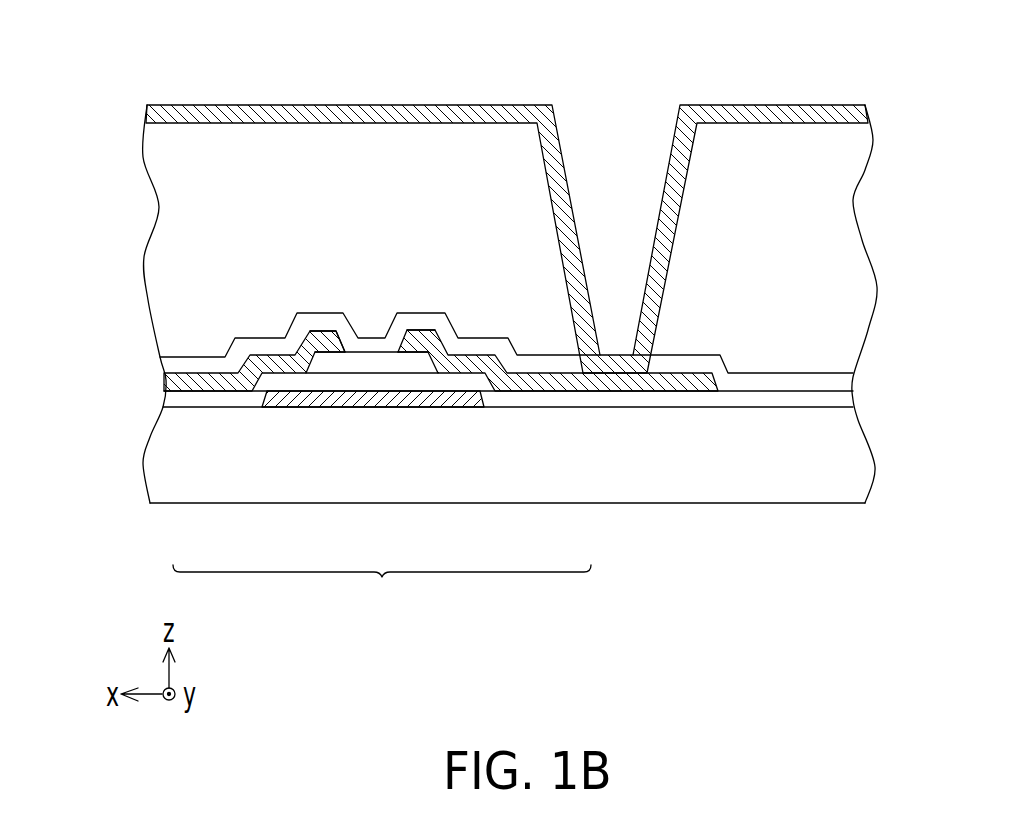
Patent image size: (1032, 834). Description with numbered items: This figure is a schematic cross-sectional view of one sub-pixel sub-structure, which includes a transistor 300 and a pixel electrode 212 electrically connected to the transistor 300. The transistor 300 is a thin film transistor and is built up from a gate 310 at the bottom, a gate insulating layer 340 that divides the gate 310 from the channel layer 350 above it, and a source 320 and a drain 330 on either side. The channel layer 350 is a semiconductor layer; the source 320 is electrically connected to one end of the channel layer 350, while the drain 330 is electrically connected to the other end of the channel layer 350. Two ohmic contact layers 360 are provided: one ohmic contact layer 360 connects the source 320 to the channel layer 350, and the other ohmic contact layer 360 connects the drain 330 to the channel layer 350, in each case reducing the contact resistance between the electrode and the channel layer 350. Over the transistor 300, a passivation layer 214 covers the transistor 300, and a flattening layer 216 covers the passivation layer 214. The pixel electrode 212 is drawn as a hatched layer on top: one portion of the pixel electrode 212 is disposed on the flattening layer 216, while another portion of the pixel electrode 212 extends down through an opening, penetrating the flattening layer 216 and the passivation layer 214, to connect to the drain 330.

The pixel electrode 212 is at (498, 112).
The passivation layer 214 is at (182, 365).
The flattening layer 216 is at (200, 263).
The transistor 300 is at (382, 594).
The gate 310 is at (420, 398).
The source 320 is at (208, 383).
The drain 330 is at (520, 387).
The gate insulating layer 340 is at (460, 380).
The channel layer 350 is at (427, 367).
The ohmic contact layer 360 is at (413, 352).